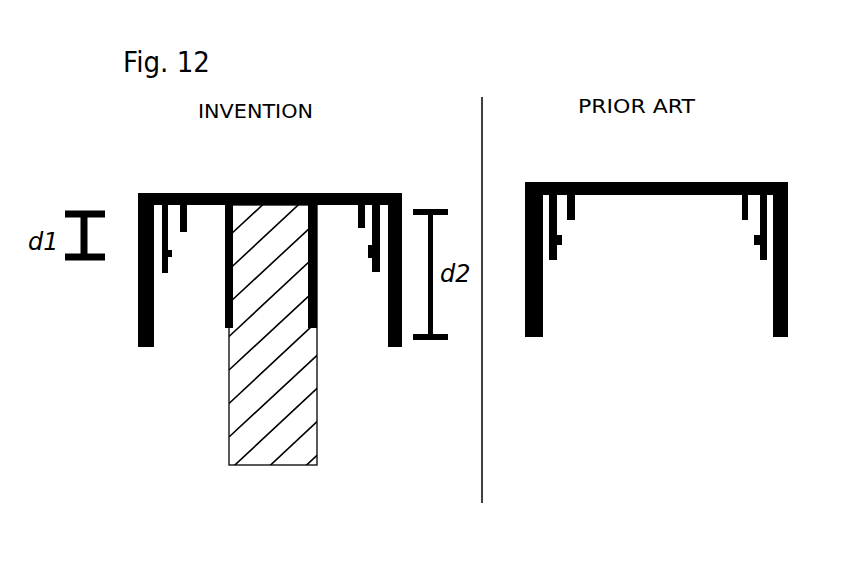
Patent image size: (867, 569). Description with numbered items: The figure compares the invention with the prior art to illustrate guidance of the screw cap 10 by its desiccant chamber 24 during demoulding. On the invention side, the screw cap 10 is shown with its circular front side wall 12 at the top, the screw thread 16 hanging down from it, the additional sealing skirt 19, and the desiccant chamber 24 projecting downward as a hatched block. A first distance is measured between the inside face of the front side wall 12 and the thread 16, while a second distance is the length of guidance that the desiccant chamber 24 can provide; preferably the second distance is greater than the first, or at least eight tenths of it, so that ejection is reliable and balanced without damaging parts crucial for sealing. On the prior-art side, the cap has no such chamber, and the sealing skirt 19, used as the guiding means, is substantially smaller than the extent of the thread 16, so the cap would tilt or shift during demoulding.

The screw cap 10 is at (397, 169).
The circular front side wall 12 is at (320, 193).
The screw thread 16 is at (170, 256).
The additional sealing skirt 19 is at (361, 229).
The desiccant chamber 24 is at (317, 328).